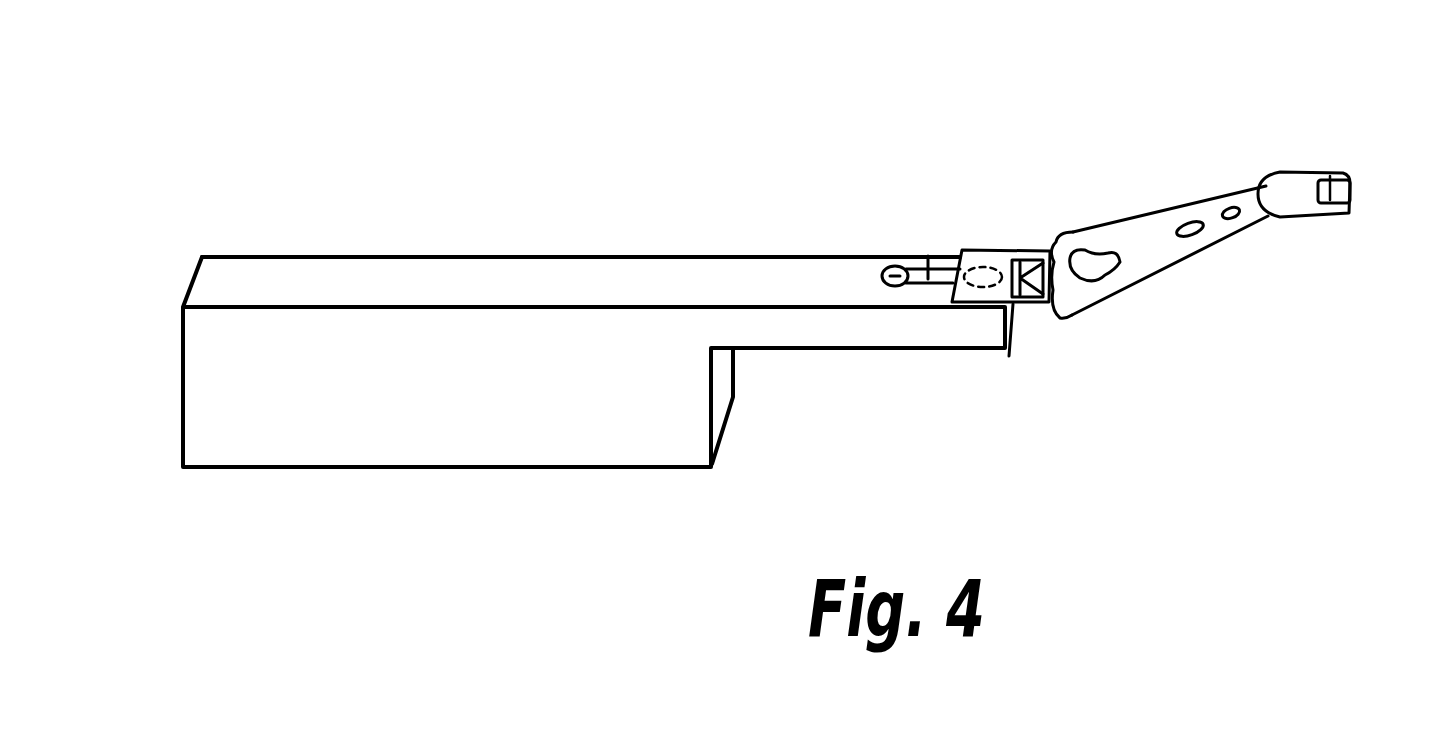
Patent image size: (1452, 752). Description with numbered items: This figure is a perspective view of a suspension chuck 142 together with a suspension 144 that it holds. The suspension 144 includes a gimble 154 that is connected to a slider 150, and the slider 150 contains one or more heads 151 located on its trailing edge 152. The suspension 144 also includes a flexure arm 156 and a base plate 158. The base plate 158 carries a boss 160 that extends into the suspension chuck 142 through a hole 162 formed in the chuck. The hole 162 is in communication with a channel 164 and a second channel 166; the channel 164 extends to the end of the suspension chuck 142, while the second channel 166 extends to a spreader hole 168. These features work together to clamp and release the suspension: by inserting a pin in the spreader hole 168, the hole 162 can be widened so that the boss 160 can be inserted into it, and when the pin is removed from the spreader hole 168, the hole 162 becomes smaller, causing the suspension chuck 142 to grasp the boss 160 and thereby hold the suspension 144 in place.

The suspension chuck 142 is at (353, 258).
The suspension 144 is at (1182, 122).
The slider 150 is at (1330, 173).
The heads 151 is at (1353, 182).
The trailing edge 152 is at (1352, 204).
The gimble 154 is at (1290, 177).
The flexure arm 156 is at (1143, 267).
The base plate 158 is at (978, 265).
The boss 160 is at (990, 273).
The hole 162 is at (977, 280).
The channel 164 is at (1016, 310).
The second channel 166 is at (931, 257).
The spreader hole 168 is at (885, 269).